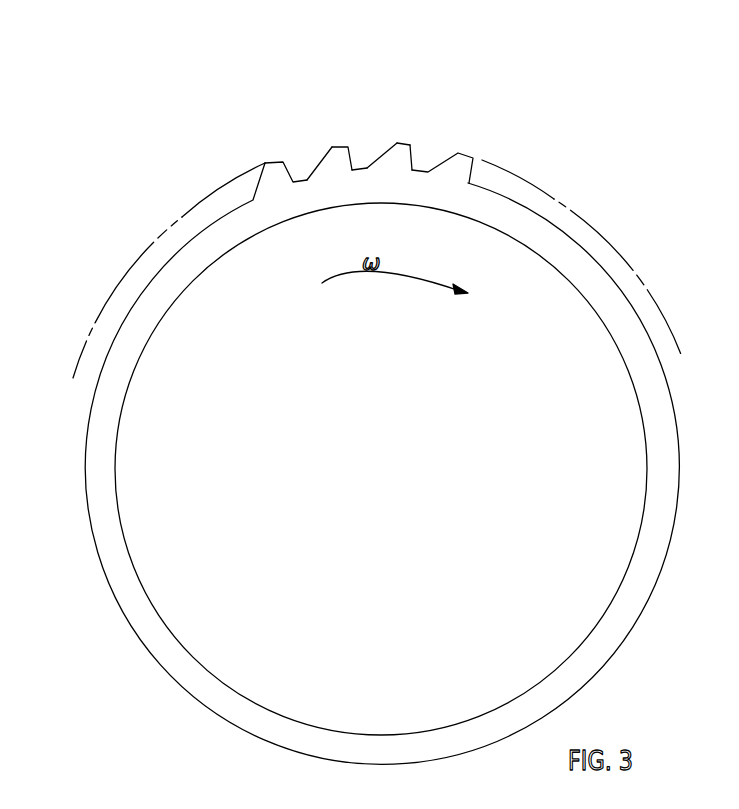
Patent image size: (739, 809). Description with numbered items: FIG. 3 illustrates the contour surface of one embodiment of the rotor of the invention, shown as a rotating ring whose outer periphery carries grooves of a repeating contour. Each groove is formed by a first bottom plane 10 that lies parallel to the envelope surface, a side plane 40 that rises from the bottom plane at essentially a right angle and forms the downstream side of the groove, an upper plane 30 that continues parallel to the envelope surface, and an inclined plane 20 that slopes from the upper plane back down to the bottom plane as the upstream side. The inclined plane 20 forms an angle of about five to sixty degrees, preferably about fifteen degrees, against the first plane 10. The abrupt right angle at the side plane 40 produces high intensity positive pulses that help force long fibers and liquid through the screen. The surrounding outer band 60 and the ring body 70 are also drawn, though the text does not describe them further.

The first bottom plane 10 is at (358, 168).
The inclined plane 20 is at (320, 158).
The upper plane 30 is at (407, 143).
The side plane 40 is at (415, 155).
The outer band 60 is at (222, 188).
The ring body 70 is at (160, 280).